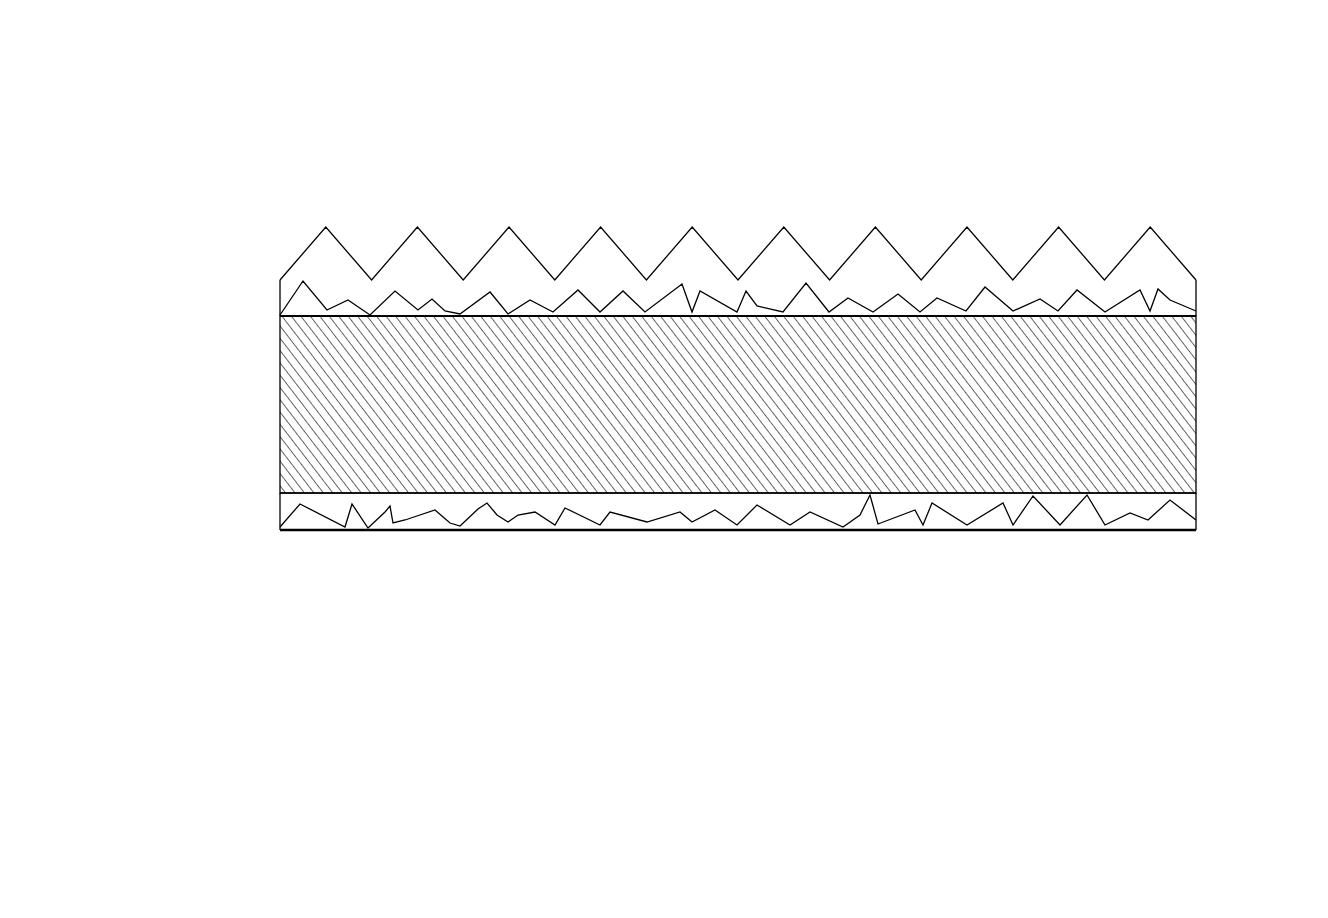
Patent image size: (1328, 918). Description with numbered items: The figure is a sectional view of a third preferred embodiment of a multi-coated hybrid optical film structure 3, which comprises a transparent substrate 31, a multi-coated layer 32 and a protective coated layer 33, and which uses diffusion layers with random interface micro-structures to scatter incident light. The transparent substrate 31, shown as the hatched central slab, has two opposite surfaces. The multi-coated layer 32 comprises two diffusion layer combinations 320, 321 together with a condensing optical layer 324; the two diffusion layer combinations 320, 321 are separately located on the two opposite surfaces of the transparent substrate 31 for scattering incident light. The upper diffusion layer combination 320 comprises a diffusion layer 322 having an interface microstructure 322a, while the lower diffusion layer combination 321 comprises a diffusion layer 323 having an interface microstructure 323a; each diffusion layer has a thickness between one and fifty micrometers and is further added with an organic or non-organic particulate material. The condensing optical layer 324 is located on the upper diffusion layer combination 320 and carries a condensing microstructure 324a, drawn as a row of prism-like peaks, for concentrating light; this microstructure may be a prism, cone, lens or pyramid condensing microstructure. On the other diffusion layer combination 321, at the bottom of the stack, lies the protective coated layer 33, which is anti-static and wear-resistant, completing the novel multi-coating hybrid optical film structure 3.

The multi-coated hybrid optical film structure 3 is at (300, 211).
The transparent substrate 31 is at (1152, 408).
The multi-coated layer 32 is at (117, 247).
The diffusion layer combination 320 is at (709, 258).
The diffusion layer combination 321 is at (711, 498).
The diffusion layer 322 is at (298, 292).
The interface microstructure 322a is at (1168, 297).
The diffusion layer 323 is at (285, 505).
The interface microstructure 323a is at (1195, 525).
The condensing optical layer 324 is at (298, 268).
The condensing microstructure 324a is at (993, 258).
The protective coated layer 33 is at (1150, 522).